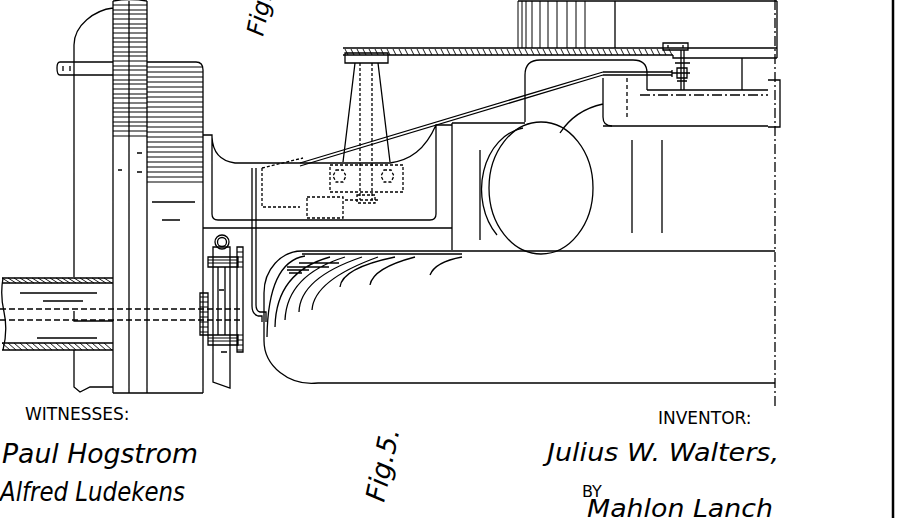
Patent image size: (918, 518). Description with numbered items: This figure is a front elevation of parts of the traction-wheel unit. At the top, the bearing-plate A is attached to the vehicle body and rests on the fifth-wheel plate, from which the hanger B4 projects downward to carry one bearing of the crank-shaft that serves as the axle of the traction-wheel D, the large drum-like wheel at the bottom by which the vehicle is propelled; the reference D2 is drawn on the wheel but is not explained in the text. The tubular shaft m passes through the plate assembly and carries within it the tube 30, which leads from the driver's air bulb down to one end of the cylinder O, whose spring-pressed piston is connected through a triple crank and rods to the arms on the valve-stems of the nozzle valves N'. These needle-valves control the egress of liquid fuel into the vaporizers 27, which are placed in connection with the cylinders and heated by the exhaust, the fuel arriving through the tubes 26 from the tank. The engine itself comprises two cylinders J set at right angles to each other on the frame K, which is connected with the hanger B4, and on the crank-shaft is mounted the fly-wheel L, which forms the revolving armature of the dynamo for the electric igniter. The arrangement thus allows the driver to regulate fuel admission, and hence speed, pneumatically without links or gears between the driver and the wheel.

The bearing-plate A is at (130, 196).
The tubular shaft m is at (53, 293).
The hanger B4 is at (249, 173).
The tube 30 is at (252, 240).
The tubes 26 is at (469, 112).
The cylinder O is at (323, 198).
The fly-wheel L is at (560, 81).
The nozzle valve N' is at (690, 110).
The frame K is at (695, 172).
The vaporizers 27 is at (730, 107).
The cylinders J is at (554, 170).
The traction-wheel D is at (519, 331).
The drum end D2 is at (390, 296).